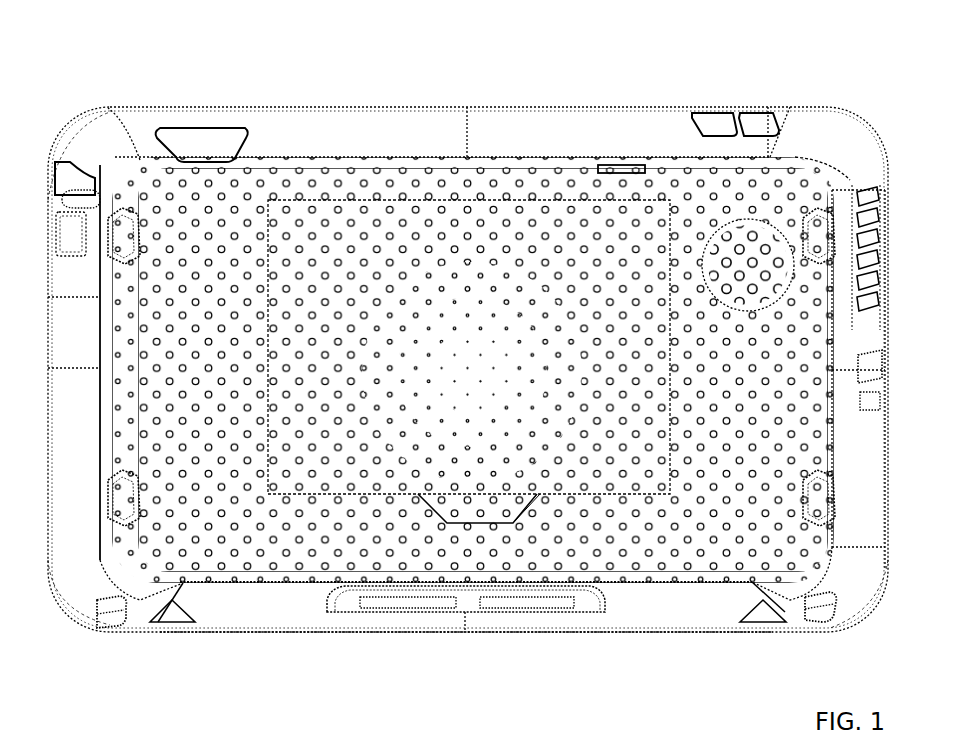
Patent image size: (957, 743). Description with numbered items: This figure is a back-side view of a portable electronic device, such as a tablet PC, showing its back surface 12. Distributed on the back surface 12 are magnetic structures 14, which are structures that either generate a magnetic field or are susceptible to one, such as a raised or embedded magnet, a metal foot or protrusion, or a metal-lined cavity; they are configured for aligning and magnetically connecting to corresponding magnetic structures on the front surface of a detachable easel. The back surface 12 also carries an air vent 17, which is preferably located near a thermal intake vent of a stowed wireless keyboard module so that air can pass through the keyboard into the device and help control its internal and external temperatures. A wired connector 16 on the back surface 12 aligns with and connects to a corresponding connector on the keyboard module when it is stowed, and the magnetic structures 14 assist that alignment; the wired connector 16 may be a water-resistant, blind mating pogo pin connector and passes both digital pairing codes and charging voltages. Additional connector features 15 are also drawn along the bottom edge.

The back surface 12 is at (482, 381).
The magnetic structures 14 is at (120, 205).
The bottom connector interfaces 15 is at (403, 608).
The wired connector 16 is at (621, 163).
The air vent 17 is at (748, 247).